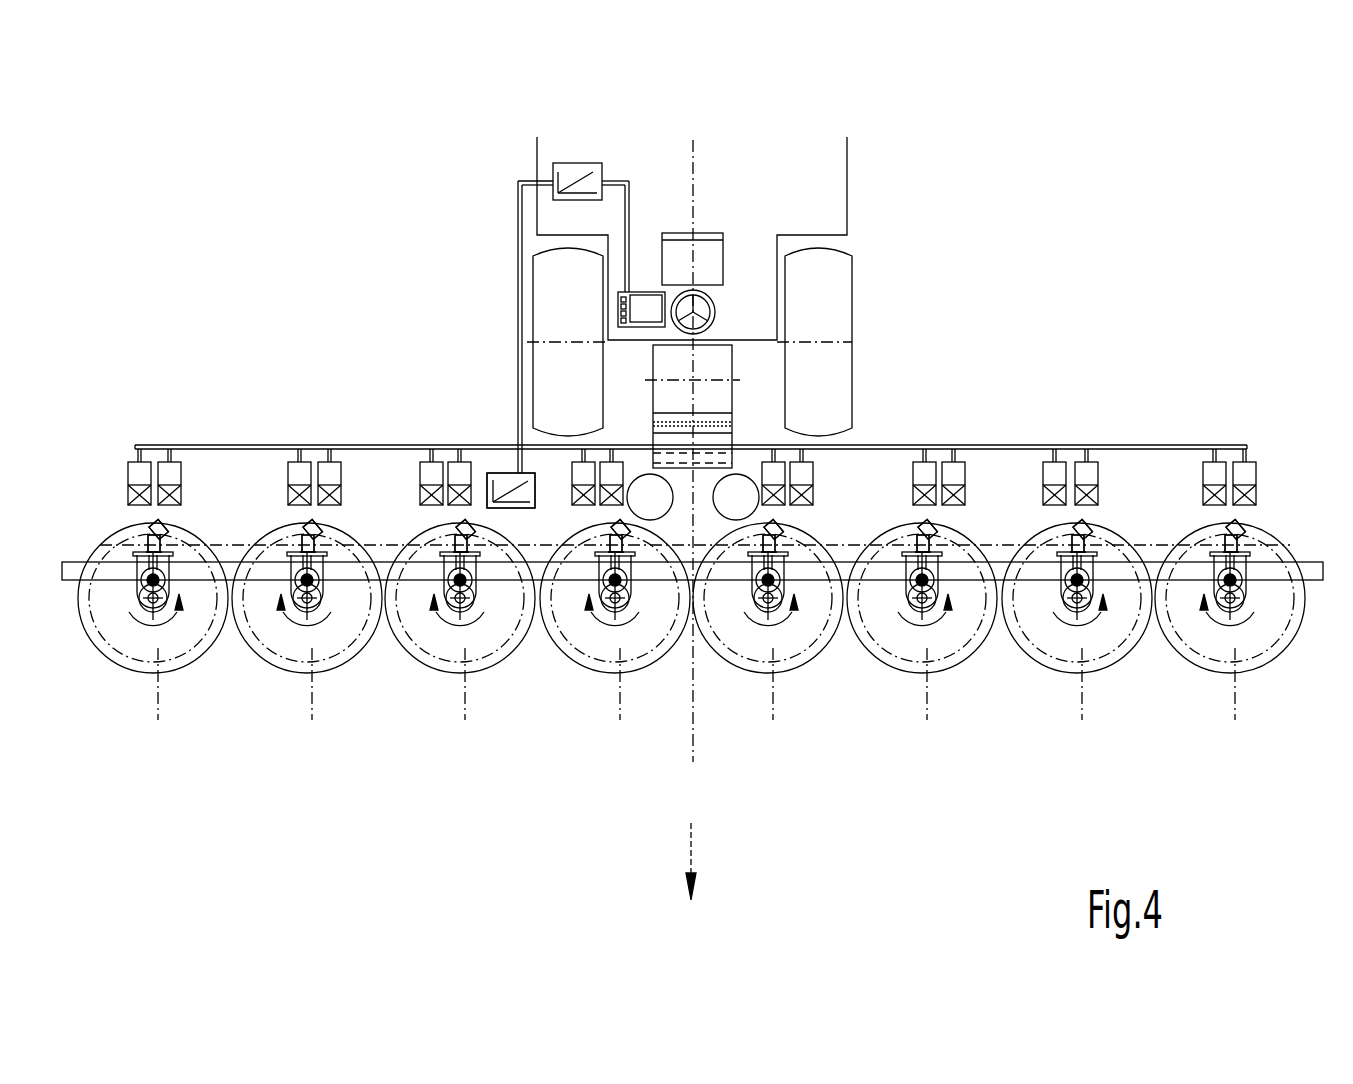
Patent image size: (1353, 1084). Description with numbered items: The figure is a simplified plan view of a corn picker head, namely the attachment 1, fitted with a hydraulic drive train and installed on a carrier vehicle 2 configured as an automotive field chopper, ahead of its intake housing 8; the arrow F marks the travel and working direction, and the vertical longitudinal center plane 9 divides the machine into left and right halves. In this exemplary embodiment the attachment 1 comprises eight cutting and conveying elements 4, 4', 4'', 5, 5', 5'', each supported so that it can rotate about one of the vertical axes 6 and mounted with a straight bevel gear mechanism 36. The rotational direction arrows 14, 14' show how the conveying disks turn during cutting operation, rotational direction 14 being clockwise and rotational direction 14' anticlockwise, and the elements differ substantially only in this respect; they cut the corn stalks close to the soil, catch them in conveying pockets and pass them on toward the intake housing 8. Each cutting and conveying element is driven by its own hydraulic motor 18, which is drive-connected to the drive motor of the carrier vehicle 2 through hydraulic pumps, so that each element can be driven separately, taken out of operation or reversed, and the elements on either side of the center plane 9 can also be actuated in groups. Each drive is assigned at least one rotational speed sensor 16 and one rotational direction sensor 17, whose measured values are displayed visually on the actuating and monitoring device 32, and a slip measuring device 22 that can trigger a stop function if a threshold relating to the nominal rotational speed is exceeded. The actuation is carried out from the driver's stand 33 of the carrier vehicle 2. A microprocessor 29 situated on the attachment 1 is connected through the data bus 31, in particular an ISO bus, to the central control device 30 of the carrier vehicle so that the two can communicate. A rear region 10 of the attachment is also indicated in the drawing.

The attachment 1 is at (1121, 284).
The carrier vehicle 2 is at (828, 305).
The cutting and conveying element 4 is at (768, 638).
The cutting and conveying element 4' is at (537, 638).
The cutting and conveying element 4'' is at (1077, 638).
The cutting and conveying element 5 is at (615, 638).
The cutting and conveying element 5' is at (845, 638).
The cutting and conveying element 5'' is at (307, 638).
The vertical axes 6 is at (143, 612).
The intake housing 8 is at (712, 362).
The vertical longitudinal center plane 9 is at (703, 185).
The rear region 10 is at (256, 378).
The rotational direction in the clockwise direction 14 is at (753, 610).
The rotational direction in the anticlockwise direction 14' is at (632, 610).
The rotational speed sensor 16 is at (139, 470).
The rotational direction sensor 17 is at (171, 470).
The hydraulic motor 18 is at (155, 535).
The straight bevel gear mechanism 36 is at (120, 505).
The slip measuring device 22 is at (500, 470).
The microprocessor 29 is at (500, 470).
The central control device of the carrier vehicle 30 is at (589, 170).
The data bus 31 is at (632, 228).
The actuating and monitoring device 32 is at (642, 318).
The driver's stand 33 is at (746, 241).
The travel and working direction F is at (697, 882).